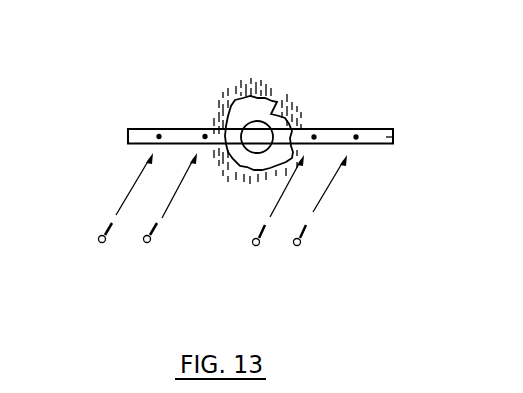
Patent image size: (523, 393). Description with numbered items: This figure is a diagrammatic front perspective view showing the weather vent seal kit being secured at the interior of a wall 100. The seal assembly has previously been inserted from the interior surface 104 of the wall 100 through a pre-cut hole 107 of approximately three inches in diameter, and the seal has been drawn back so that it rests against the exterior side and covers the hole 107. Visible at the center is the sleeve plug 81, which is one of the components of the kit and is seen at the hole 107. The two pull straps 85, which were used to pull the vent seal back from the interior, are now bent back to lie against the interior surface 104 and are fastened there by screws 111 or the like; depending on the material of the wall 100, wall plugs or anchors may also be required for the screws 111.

The wall 100 is at (134, 80).
The interior surface 104 is at (330, 103).
The pre-cut hole 107 is at (280, 104).
The sleeve plug 81 is at (257, 138).
The pull straps 85 is at (398, 142).
The screws 111 is at (147, 243).